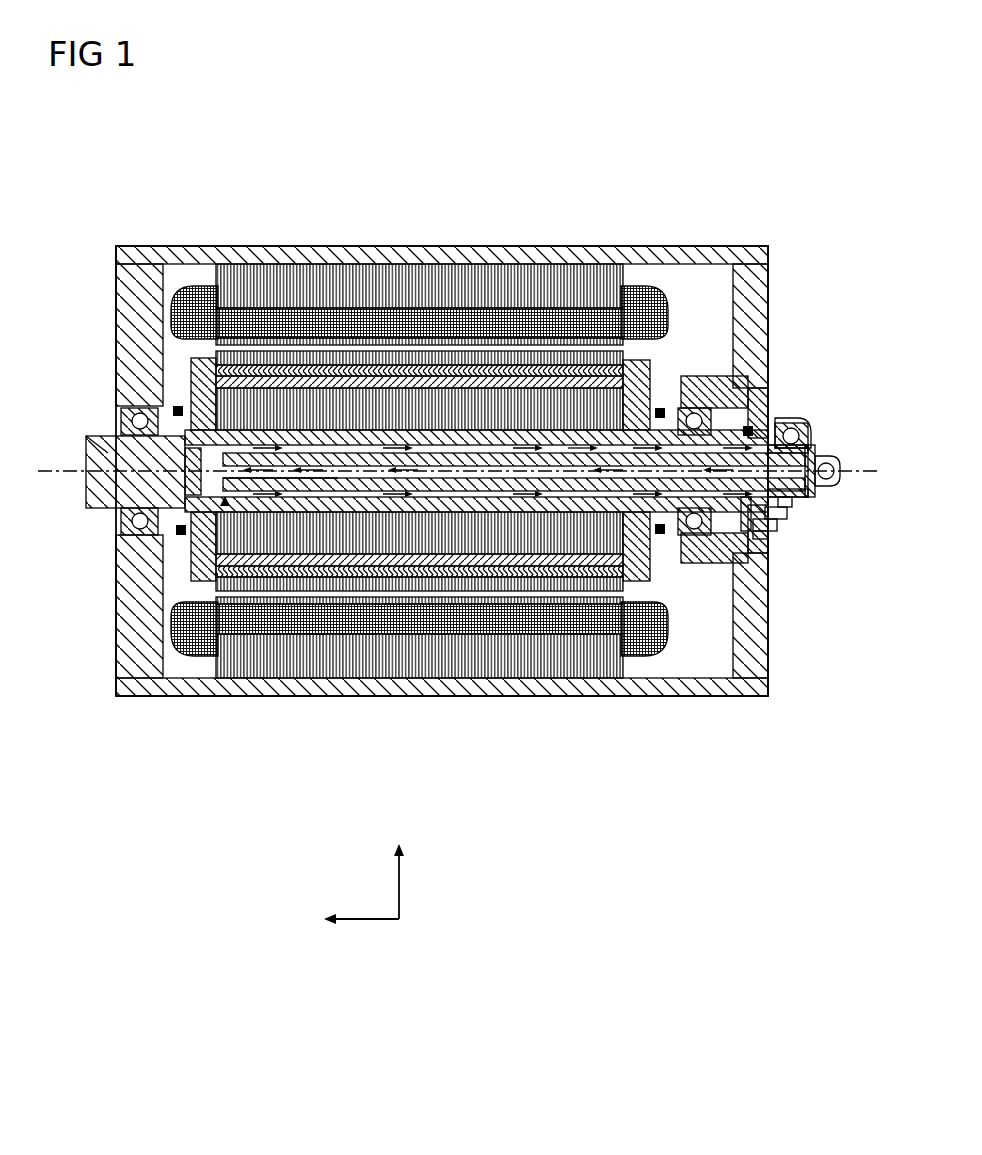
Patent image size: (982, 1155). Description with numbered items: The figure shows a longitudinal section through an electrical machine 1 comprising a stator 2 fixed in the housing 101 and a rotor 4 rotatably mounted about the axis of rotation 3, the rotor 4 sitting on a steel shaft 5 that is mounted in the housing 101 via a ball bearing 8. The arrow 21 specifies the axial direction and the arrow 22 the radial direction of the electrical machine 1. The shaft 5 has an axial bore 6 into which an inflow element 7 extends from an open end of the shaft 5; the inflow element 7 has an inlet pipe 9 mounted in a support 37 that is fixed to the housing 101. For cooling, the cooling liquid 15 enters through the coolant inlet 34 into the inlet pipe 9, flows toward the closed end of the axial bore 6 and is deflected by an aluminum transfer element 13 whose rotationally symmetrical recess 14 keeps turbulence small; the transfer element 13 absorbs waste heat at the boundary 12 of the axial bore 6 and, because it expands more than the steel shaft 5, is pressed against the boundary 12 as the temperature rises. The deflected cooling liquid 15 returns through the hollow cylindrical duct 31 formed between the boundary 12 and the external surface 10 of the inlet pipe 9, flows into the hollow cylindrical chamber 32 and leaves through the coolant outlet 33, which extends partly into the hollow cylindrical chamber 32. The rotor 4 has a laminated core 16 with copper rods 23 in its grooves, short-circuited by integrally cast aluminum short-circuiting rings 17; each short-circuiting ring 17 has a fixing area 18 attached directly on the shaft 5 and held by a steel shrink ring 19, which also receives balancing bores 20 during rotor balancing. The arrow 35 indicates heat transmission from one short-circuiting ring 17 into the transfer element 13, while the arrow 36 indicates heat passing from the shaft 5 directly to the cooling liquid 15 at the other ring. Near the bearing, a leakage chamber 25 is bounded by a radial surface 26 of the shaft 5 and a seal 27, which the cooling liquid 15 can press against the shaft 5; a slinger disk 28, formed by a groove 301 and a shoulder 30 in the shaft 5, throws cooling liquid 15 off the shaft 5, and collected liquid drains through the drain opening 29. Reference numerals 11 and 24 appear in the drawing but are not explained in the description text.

The electrical machine 1 is at (608, 92).
The stator 2 is at (203, 282).
The axis of rotation 3 is at (860, 463).
The rotor 4 is at (168, 375).
The shaft 5 is at (395, 498).
The axial bore 6 is at (233, 487).
The inflow element 7 is at (217, 498).
The bearing 8 is at (690, 523).
The inlet pipe 9 is at (330, 477).
The external surface 10 is at (440, 440).
The central flow path 11 is at (470, 467).
The boundary of the axial bore 12 is at (577, 440).
The transfer element 13 is at (175, 467).
The recess 14 is at (112, 482).
The cooling liquid 15 is at (672, 490).
The laminated core 16 is at (603, 238).
The short-circuiting ring 17 is at (190, 553).
The fixing area 18 is at (120, 413).
The shrink ring 19 is at (176, 523).
The balancing bores 20 is at (163, 398).
The arrow indicating axial direction 21 is at (358, 913).
The arrow indicating radial direction 22 is at (392, 878).
The copper rods 23 is at (388, 372).
The rotor laminated core 24 is at (348, 363).
The leakage chamber 25 is at (765, 540).
The radial surface 26 is at (768, 520).
The seal 27 is at (767, 513).
The slinger disk 28 is at (767, 407).
The drain opening 29 is at (757, 523).
The shoulder 30 is at (770, 510).
The hollow cylindrical duct 31 is at (305, 440).
The hollow cylindrical chamber 32 is at (770, 495).
The coolant outlet 33 is at (783, 413).
The coolant inlet 34 is at (817, 443).
The arrow indicating heat transmission 35 is at (88, 435).
The arrow indicating heat transfer 36 is at (642, 377).
The support 37 is at (767, 347).
The housing 101 is at (652, 250).
The groove 301 is at (740, 423).